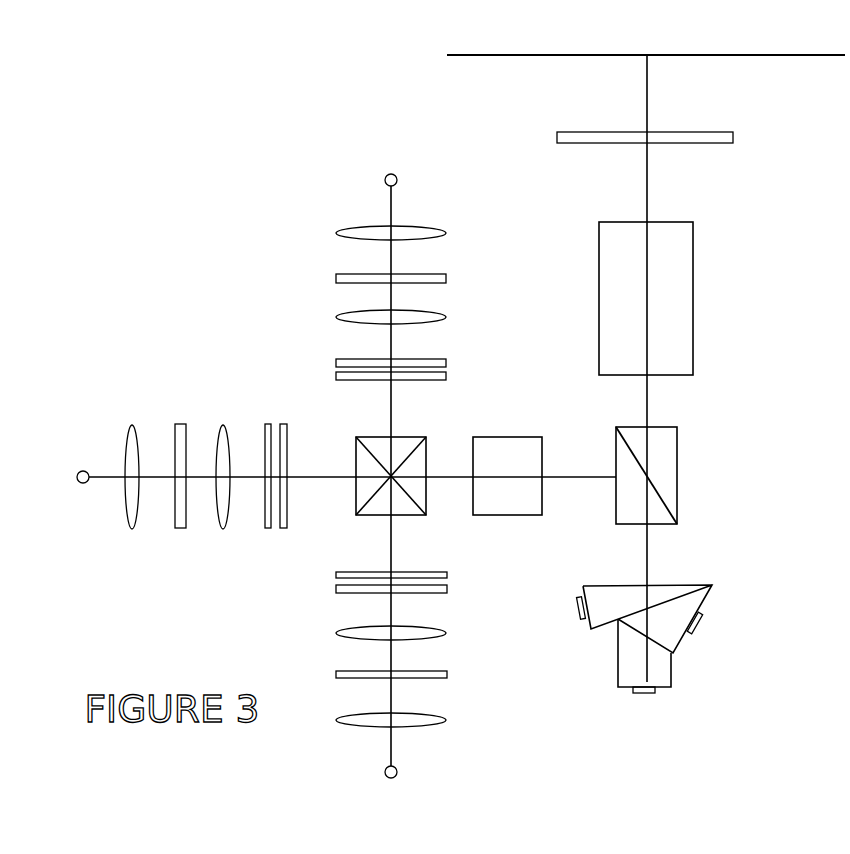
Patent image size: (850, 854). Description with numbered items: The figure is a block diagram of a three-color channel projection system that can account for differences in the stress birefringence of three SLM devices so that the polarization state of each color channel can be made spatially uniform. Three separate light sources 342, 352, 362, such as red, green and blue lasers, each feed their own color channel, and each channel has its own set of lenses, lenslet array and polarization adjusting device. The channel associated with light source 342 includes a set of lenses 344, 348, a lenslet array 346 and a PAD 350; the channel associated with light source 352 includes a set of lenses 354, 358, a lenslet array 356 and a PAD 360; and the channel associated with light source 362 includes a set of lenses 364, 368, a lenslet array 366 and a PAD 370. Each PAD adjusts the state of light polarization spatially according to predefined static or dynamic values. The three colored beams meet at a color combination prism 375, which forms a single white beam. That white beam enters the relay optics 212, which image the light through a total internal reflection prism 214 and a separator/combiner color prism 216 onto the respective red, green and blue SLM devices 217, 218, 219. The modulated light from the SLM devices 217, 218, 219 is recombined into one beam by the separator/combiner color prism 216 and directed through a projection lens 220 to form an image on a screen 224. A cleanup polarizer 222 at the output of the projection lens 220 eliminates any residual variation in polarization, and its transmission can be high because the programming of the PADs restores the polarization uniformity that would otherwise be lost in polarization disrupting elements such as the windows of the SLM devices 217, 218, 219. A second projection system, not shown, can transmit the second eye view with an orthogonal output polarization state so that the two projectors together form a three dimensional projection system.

The relay optics 212 is at (509, 459).
The total internal reflection (TIR) prism 214 is at (697, 448).
The separator/combiner color prism 216 is at (695, 573).
The SLM device 217 is at (644, 669).
The SLM device 218 is at (710, 632).
The SLM device 219 is at (563, 608).
The projection lens 220 is at (683, 216).
The cleanup polarizer 222 is at (716, 119).
The screen 224 is at (646, 44).
The light source 342 is at (77, 463).
The lens 344 is at (130, 458).
The lenslet array 346 is at (182, 457).
The lens 348 is at (228, 458).
The PAD 350 is at (275, 457).
The light source 352 is at (414, 774).
The lens 354 is at (421, 715).
The lenslet array 356 is at (419, 676).
The lens 358 is at (419, 636).
The PAD 360 is at (420, 584).
The light source 362 is at (419, 177).
The lens 364 is at (424, 233).
The lenslet array 366 is at (424, 285).
The lens 368 is at (424, 326).
The PAD 370 is at (424, 366).
The color combination prism 375 is at (388, 463).